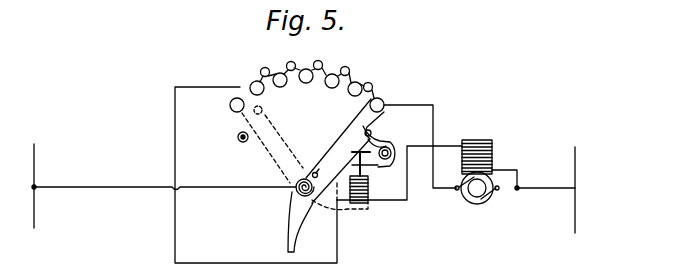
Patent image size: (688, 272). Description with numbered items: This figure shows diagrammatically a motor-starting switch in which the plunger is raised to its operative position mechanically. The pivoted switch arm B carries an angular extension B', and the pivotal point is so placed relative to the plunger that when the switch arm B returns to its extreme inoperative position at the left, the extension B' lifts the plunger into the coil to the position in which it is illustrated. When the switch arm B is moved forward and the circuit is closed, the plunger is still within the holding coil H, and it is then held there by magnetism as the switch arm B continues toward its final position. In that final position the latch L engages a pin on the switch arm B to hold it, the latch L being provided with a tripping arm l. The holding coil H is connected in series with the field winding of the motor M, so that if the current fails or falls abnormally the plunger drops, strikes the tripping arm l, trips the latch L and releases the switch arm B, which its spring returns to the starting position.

The switch arm B is at (340, 150).
The angular extension B' is at (328, 217).
The latch L is at (376, 141).
The tripping arm l is at (368, 168).
The holding coil H is at (377, 192).
The motor M is at (478, 142).